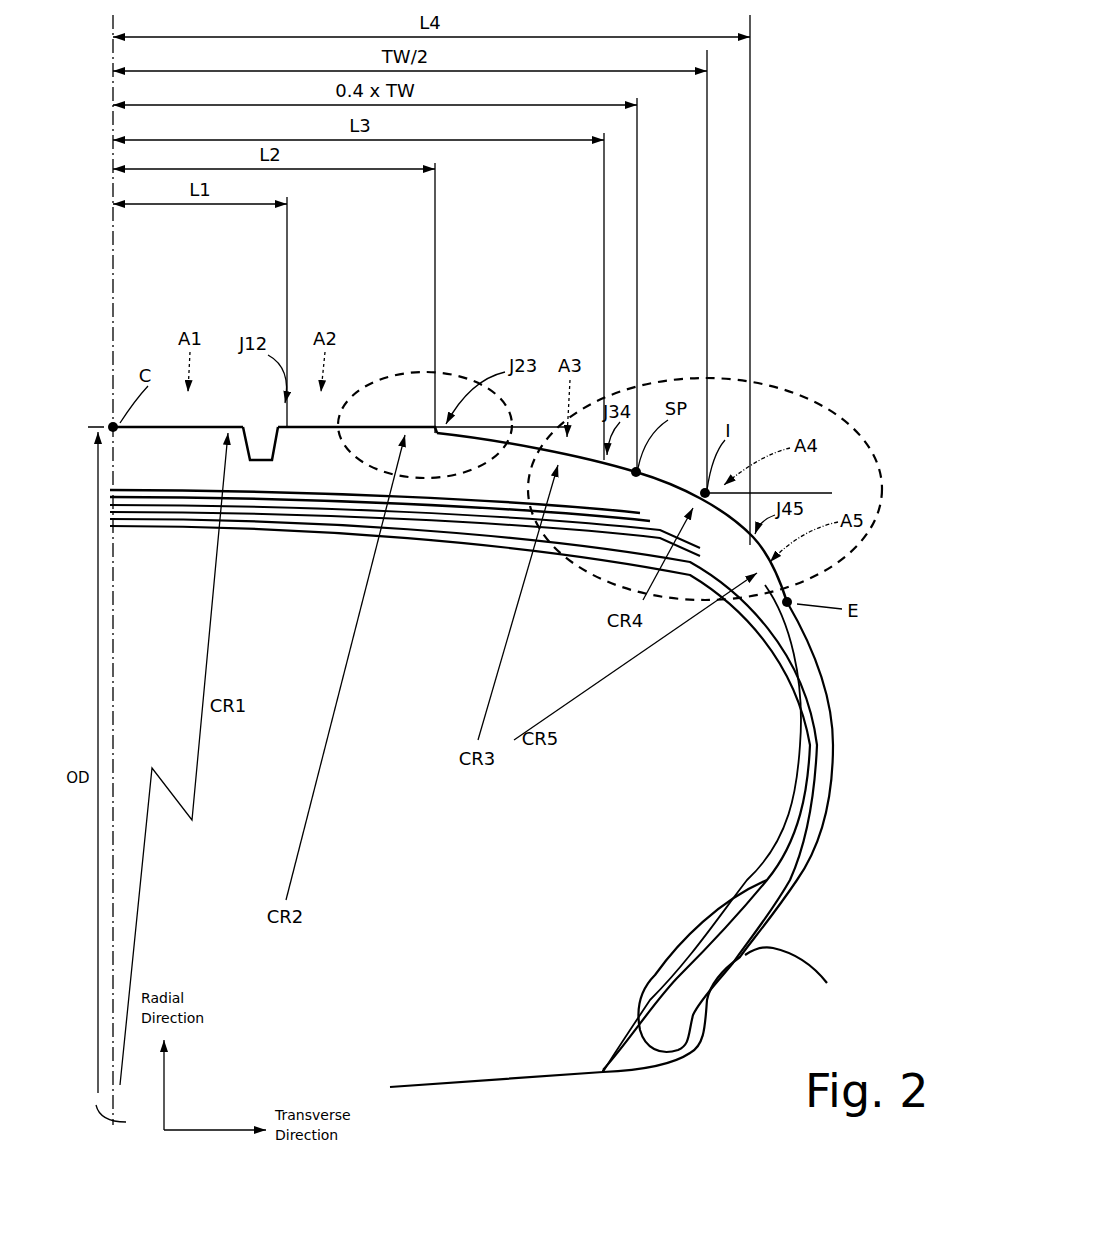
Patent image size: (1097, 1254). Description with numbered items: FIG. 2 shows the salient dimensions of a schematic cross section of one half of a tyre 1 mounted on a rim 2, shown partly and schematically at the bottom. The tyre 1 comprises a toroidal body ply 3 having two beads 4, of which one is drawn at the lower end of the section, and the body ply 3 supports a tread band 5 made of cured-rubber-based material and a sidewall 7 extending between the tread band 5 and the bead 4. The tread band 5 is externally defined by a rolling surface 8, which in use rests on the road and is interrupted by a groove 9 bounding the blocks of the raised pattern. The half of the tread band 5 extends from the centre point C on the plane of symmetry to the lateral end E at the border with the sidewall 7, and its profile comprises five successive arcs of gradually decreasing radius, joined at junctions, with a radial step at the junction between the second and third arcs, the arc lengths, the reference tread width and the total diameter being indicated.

The tyre 1 is at (820, 300).
The rim 2 is at (773, 952).
The body ply 3 is at (808, 806).
The bead 4 is at (652, 928).
The tread band 5 is at (508, 292).
The sidewall 7 is at (822, 772).
The rolling surface 8 is at (242, 292).
The groove 9 is at (258, 432).